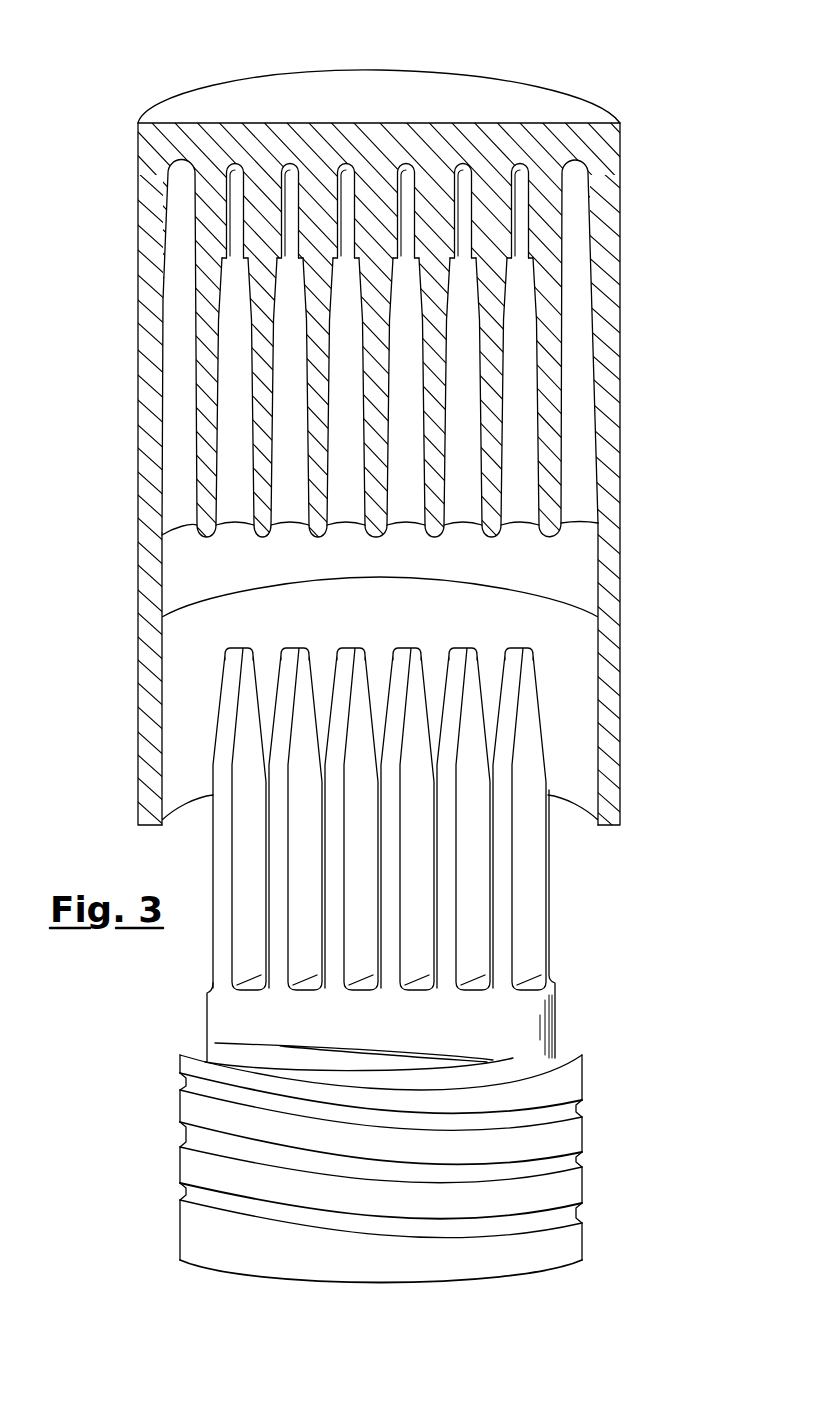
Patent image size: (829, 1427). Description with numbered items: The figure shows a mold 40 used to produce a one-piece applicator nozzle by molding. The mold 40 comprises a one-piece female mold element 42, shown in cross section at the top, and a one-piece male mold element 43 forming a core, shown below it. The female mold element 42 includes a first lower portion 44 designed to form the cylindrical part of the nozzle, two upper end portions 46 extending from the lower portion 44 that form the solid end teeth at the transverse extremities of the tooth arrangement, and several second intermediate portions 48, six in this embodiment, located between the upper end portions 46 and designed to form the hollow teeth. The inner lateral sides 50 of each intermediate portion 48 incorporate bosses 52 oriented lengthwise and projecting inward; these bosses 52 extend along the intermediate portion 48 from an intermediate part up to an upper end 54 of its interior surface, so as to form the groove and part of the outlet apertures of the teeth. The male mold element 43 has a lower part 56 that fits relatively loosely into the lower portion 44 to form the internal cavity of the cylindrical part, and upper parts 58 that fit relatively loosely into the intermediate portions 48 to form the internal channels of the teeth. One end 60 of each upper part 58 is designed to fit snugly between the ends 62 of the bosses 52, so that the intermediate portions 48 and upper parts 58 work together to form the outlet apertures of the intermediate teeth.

The mold 40 is at (708, 288).
The female mold element 42 is at (608, 85).
The male mold element 43 is at (612, 1035).
The first lower portion 44 is at (205, 638).
The upper end portions 46 is at (183, 357).
The second intermediate portion 48 is at (237, 468).
The inner lateral sides 50 is at (250, 410).
The bosses 52 is at (237, 222).
The upper end 54 is at (224, 157).
The lower part 56 is at (588, 1131).
The upper part 58 is at (557, 903).
The end 60 is at (250, 688).
The ends 62 is at (245, 262).